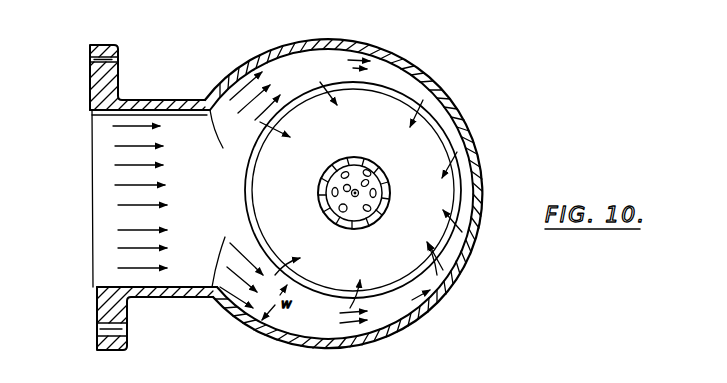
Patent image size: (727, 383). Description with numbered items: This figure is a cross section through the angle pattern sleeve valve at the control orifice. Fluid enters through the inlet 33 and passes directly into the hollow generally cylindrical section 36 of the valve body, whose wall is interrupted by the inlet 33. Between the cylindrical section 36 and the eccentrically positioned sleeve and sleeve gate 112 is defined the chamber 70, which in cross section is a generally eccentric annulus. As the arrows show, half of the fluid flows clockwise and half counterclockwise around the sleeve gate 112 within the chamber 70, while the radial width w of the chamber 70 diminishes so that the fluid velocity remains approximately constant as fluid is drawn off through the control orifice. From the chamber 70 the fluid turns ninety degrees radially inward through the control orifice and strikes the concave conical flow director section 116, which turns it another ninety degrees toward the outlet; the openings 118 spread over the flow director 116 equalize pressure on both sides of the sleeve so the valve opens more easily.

The inlet 33 is at (110, 197).
The hollow generally cylindrical section 36 is at (461, 121).
The chamber 70 is at (272, 78).
The sleeve gate 112 is at (254, 163).
The concave conical flow director section 116 is at (360, 157).
The openings 118 is at (381, 221).